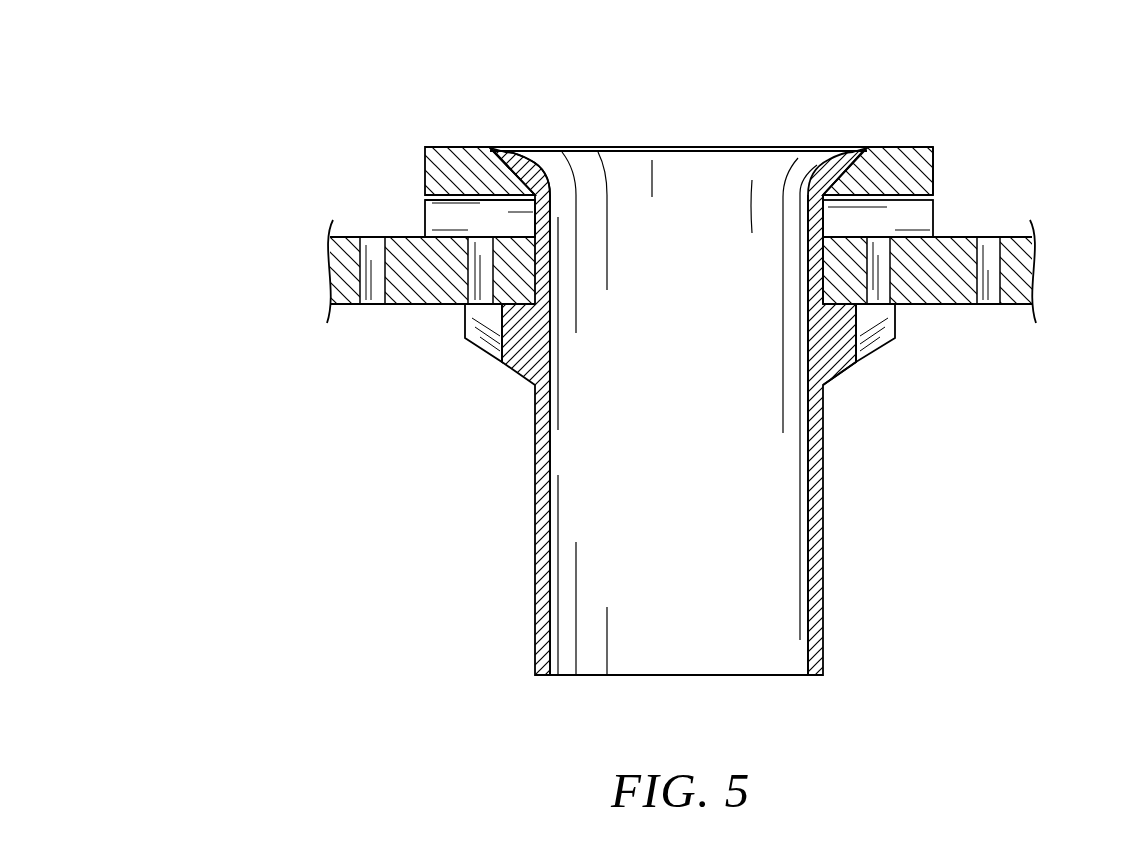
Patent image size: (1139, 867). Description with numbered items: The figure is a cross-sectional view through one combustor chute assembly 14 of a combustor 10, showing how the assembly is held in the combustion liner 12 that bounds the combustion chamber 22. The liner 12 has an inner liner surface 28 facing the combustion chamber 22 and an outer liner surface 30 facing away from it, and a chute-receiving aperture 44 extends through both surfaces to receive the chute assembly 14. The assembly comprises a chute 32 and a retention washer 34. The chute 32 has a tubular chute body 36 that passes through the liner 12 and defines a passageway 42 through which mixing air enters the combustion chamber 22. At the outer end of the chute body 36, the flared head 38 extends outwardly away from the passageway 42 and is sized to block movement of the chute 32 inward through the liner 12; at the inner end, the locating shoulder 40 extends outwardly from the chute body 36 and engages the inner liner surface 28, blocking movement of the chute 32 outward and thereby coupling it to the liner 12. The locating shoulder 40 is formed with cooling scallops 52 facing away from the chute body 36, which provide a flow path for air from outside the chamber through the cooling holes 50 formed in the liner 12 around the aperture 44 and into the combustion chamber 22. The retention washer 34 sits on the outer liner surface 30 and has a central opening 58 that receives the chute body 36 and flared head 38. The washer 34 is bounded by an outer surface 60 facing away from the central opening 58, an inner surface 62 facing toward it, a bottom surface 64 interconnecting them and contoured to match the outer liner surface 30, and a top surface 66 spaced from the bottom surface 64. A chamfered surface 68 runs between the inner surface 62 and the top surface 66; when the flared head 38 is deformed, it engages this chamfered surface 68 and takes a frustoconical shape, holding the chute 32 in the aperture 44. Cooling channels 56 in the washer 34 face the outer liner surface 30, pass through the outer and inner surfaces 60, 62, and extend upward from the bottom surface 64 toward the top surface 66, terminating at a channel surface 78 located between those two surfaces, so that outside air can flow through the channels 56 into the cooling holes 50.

The combustor 10 is at (973, 110).
The combustion liner 12 is at (1013, 225).
The combustor chute assembly 14 is at (274, 503).
The combustion chamber 22 is at (964, 452).
The inner liner surface 28 is at (948, 305).
The outer liner surface 30 is at (970, 237).
The chute 32 is at (470, 552).
The retention washer 34 is at (413, 162).
The chute body 36 is at (825, 557).
The flared head 38 is at (532, 163).
The locating shoulder 40 is at (840, 358).
The passageway 42 is at (659, 335).
The chute-receiving aperture 44 is at (796, 270).
The cooling hole 50 is at (479, 288).
The cooling scallop 52 is at (483, 340).
The cooling channel 56 is at (443, 213).
The central opening 58 is at (583, 183).
The outer surface 60 is at (933, 178).
The inner surface 62 is at (820, 220).
The bottom surface 64 is at (912, 237).
The top surface 66 is at (902, 148).
The chamfered surface 68 is at (829, 163).
The channel surface 78 is at (462, 200).